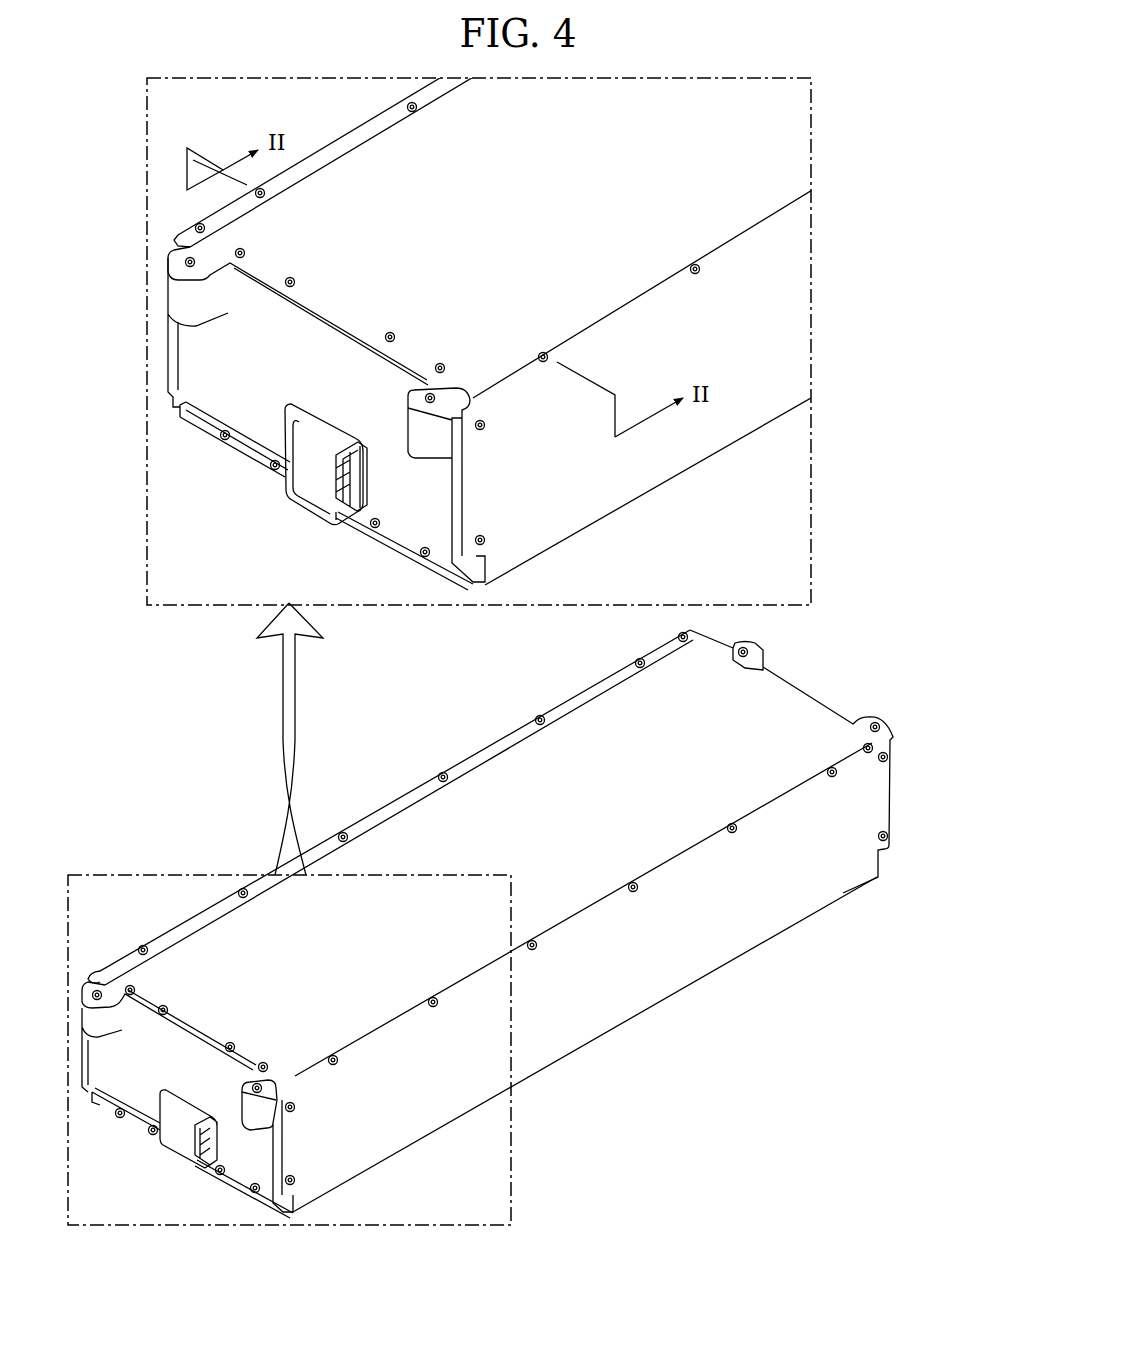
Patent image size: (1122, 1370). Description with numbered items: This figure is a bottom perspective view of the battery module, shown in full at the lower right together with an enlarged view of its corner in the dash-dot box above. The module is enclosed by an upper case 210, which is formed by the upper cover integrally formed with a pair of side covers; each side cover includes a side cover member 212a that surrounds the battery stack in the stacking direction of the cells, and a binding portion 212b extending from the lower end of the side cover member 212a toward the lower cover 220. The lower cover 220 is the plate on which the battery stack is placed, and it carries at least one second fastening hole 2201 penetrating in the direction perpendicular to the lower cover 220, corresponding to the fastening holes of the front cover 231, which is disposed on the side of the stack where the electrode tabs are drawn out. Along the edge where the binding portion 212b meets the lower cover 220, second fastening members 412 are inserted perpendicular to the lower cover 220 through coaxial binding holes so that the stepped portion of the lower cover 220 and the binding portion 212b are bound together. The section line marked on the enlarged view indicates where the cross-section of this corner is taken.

The upper case 210 is at (633, 695).
The side cover member 212a is at (687, 427).
The binding portion 212b is at (610, 317).
The lower cover 220 is at (823, 723).
The second fastening hole 2201 is at (428, 418).
The front cover 231 is at (237, 407).
The second fastening member 412 is at (700, 269).